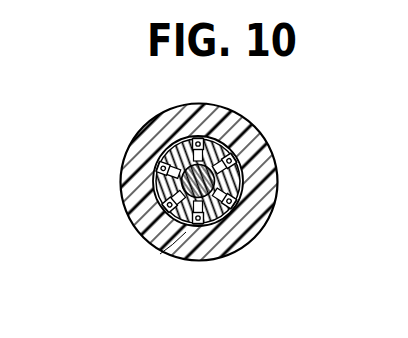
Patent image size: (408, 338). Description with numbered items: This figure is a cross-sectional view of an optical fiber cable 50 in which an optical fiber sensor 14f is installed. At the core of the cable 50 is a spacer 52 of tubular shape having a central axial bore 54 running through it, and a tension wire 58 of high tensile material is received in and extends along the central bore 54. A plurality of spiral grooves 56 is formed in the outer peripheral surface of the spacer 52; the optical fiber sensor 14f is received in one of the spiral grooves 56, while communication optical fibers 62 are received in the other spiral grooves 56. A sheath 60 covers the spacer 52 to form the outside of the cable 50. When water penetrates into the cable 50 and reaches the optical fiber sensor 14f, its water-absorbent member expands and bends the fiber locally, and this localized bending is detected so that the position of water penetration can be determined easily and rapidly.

The optical fiber cable 50 is at (130, 132).
The spacer 52 is at (182, 189).
The central axial bore 54 is at (158, 201).
The spiral grooves 56 is at (227, 209).
The tension wire 58 is at (157, 149).
The sheath 60 is at (267, 217).
The communication optical fibers 62 is at (245, 177).
The optical fiber sensor 14f is at (160, 254).